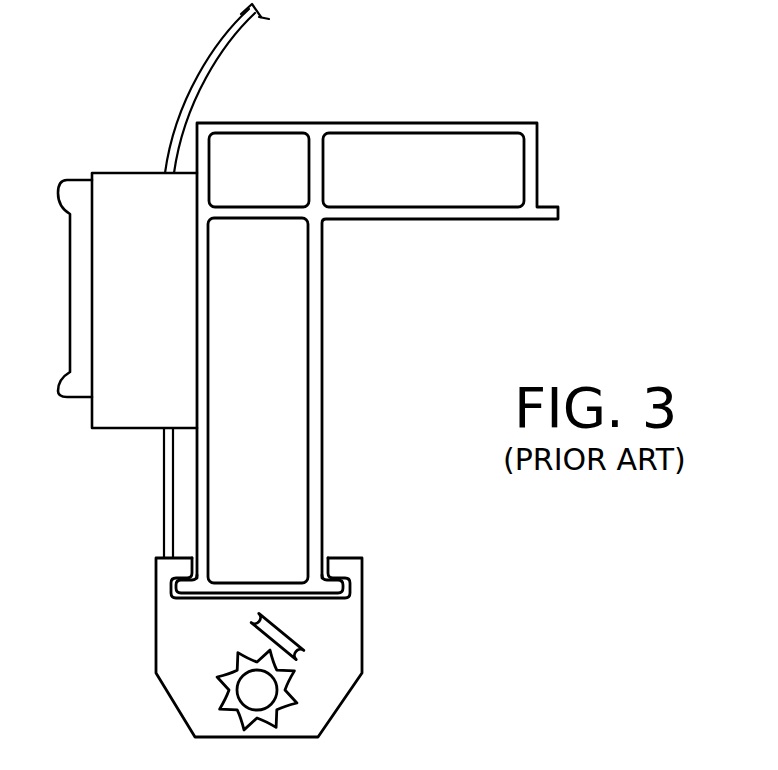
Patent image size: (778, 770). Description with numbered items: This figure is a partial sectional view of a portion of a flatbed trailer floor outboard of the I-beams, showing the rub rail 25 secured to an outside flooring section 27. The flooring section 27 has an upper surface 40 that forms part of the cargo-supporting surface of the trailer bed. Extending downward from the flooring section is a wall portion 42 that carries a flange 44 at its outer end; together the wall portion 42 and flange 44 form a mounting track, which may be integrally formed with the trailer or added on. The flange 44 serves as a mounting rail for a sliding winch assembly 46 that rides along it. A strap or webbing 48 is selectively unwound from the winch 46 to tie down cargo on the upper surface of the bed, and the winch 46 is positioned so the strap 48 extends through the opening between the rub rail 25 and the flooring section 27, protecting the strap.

The rub rail 25 is at (113, 167).
The outside flooring section 27 is at (285, 124).
The upper surface 40 is at (420, 123).
The downwardly extending wall portion 42 is at (322, 337).
The flange 44 is at (237, 583).
The sliding winch assembly 46 is at (155, 637).
The strap or webbing 48 is at (163, 502).